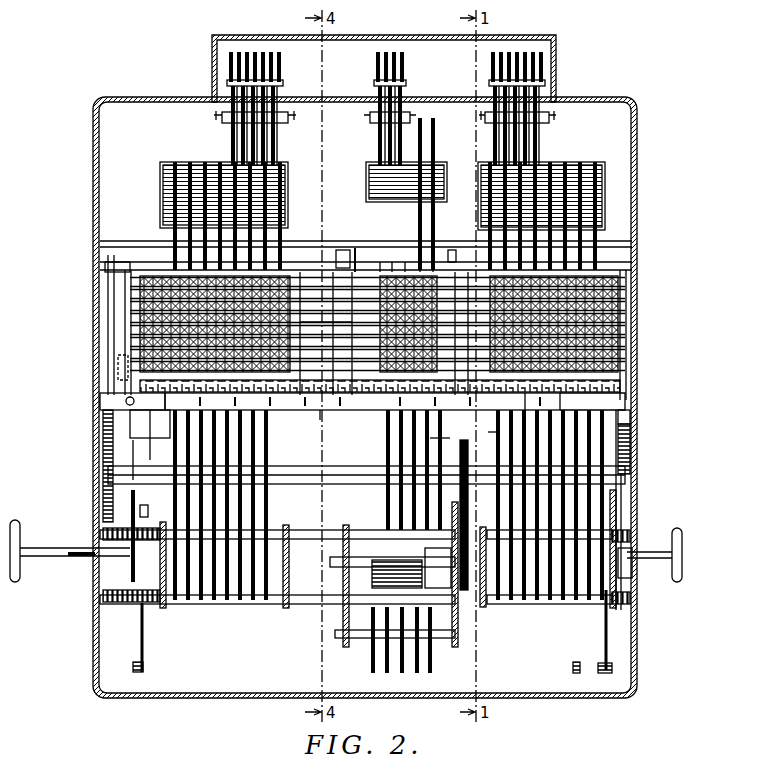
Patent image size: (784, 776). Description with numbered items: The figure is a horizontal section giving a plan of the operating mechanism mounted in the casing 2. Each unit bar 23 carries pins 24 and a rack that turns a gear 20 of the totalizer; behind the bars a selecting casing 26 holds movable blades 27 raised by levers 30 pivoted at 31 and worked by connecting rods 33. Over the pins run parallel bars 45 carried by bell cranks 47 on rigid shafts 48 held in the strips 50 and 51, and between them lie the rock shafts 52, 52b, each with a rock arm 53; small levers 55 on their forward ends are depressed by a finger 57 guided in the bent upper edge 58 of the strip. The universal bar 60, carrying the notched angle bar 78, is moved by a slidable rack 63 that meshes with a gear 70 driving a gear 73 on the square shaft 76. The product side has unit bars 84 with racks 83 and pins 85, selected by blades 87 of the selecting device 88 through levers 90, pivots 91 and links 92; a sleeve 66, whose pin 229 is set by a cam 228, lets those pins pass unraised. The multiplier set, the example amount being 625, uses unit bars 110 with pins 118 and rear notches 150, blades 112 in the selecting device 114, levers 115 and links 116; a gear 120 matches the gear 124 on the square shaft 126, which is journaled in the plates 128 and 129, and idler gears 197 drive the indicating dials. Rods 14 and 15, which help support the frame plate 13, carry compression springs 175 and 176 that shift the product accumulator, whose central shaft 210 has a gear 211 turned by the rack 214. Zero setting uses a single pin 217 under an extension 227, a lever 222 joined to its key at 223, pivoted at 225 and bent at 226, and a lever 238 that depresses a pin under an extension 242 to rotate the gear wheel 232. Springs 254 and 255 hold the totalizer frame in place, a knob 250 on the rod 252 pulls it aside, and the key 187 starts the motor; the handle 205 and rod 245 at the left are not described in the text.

The casing 2 is at (632, 190).
The links 92 is at (283, 62).
The levers 90 is at (280, 148).
The pivot 91 is at (230, 117).
The links 116 is at (406, 66).
The levers 115 is at (372, 133).
The selecting device 114 is at (368, 170).
The notches 150 is at (435, 152).
The connecting links 33 is at (545, 65).
The lever 30 is at (532, 148).
The pivot 31 is at (549, 118).
The selecting devices 88 is at (288, 166).
The blades 87 is at (290, 196).
The blades 112 is at (366, 182).
The selecting device casing 26 is at (478, 190).
The movable blades 27 is at (590, 168).
The pins 85 is at (290, 258).
The universal bar 60 is at (340, 258).
The strip 50 is at (350, 255).
The rock shafts 52 is at (366, 250).
The angle bar 78 is at (470, 258).
The pins 118 is at (440, 268).
The bell cranks 47 is at (620, 308).
The rigid shafts 48 is at (140, 330).
The parallel bars 45 is at (620, 345).
The pins 24 is at (618, 386).
The extension 242 is at (625, 278).
The extension 227 is at (120, 285).
The pin 217 is at (130, 282).
The bent rear end 226 is at (128, 368).
The cam 228 is at (120, 386).
The pin 229 is at (110, 420).
The upper edge of strip 58 is at (362, 402).
The depending finger 57 is at (526, 402).
The strip 51 is at (628, 398).
The slidable rack 63 is at (630, 416).
The gear 70 is at (630, 436).
The gear 73 is at (630, 492).
The racks 83 is at (278, 453).
The unit bars 84 is at (280, 432).
The sleeve 66 is at (159, 435).
The rack 214 is at (138, 453).
The unit bars 110 is at (386, 460).
The small levers 55 is at (322, 410).
The rock shaft 52b is at (370, 395).
The multiplier amount 625 is at (430, 438).
The unit bar 23 is at (488, 432).
The gear 120 is at (468, 472).
The square shaft 76 is at (366, 474).
The gears 20 is at (515, 590).
The rod 14 is at (218, 604).
The pivot 225 is at (144, 512).
The central shaft 210 is at (130, 560).
The compression spring 176 is at (100, 535).
The compression spring 175 is at (108, 604).
The handle 205 is at (22, 530).
The shaft 245 is at (80, 558).
The gear 211 is at (95, 556).
The lever 222 is at (144, 648).
The connection point 223 is at (143, 668).
The square shaft 126 is at (289, 578).
The rod 15 is at (340, 530).
The plate 128 is at (335, 630).
The gear 124 is at (462, 600).
The plate 129 is at (455, 628).
The idler gears 197 is at (432, 665).
The plate 13 is at (616, 610).
The lever 238 is at (604, 645).
The key 187 is at (578, 673).
The spring 255 is at (630, 528).
The spring 254 is at (630, 600).
The gear wheel 232 is at (632, 577).
The short rod 252 is at (652, 552).
The knob 250 is at (682, 555).
The rock arm 53 is at (326, 328).